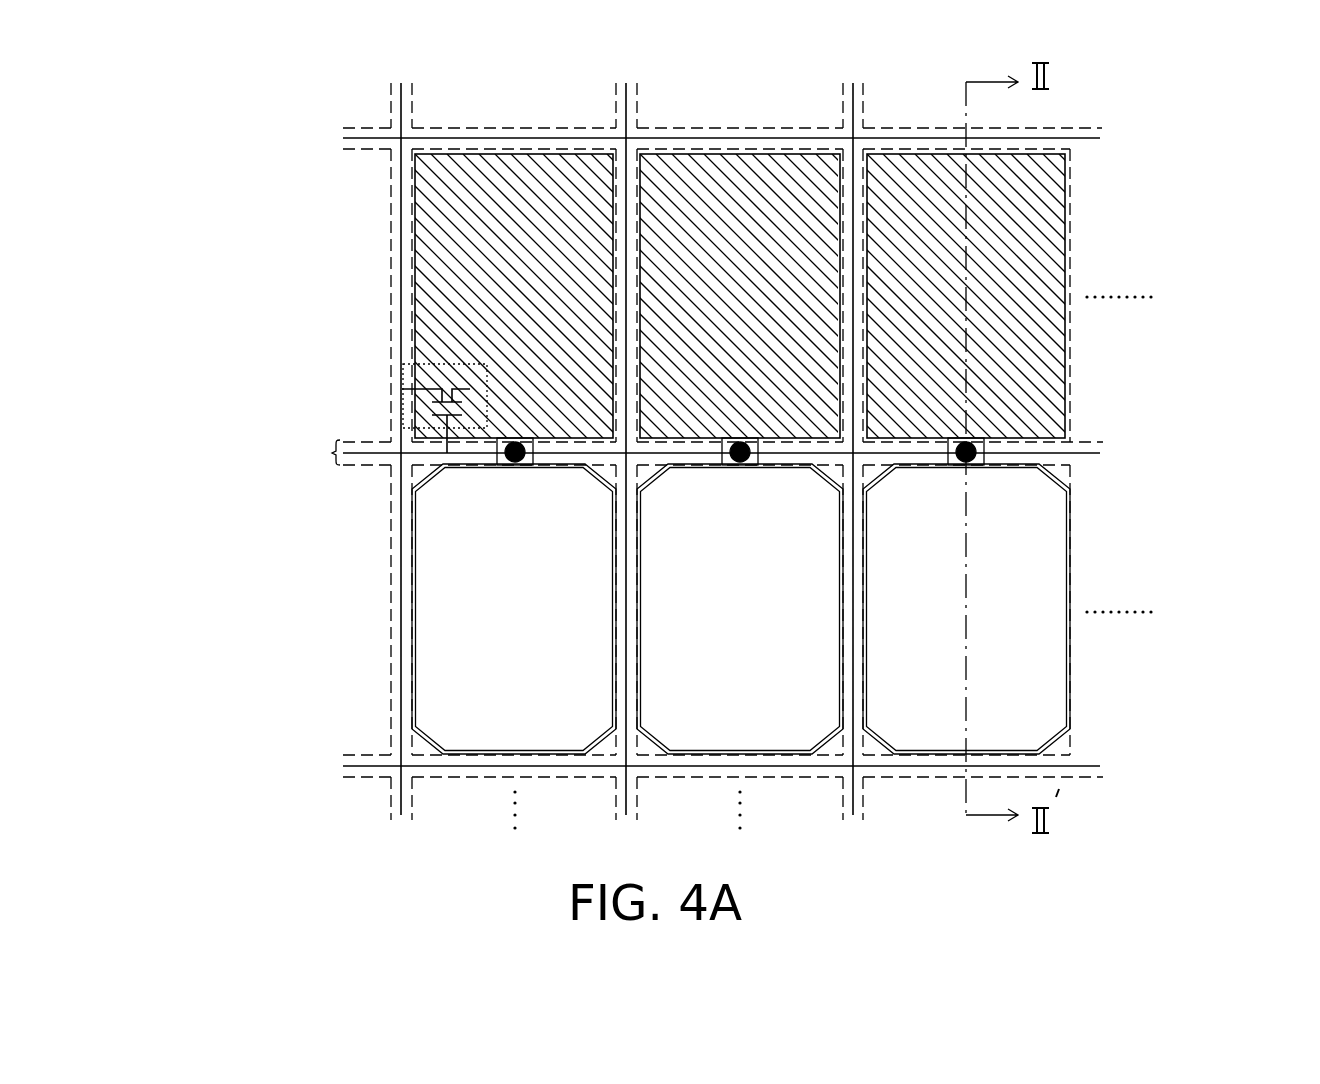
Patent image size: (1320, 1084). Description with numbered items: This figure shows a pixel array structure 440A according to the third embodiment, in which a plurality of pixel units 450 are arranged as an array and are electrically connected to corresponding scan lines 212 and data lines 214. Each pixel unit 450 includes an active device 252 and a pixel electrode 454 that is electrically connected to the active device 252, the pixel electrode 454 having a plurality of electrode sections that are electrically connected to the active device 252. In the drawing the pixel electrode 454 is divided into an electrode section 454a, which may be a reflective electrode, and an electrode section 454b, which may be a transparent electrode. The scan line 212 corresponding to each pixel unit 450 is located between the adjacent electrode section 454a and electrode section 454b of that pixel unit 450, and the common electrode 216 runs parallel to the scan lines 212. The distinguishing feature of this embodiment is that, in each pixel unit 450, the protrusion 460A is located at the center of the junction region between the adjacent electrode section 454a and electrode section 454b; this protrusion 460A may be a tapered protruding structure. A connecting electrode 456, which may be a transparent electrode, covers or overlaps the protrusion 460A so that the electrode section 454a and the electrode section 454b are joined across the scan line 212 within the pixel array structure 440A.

The pixel array structure 440A is at (1281, 817).
The scan line 212 is at (1077, 453).
The data line 214 is at (402, 672).
The common electrode 216 is at (465, 767).
The pixel unit 450 is at (200, 238).
The pixel electrode 454 is at (272, 202).
The electrode section 454a is at (455, 283).
The electrode section 454b is at (548, 482).
The connecting electrode 456 is at (518, 438).
The active device 252 is at (403, 395).
The protrusion 460A is at (508, 463).